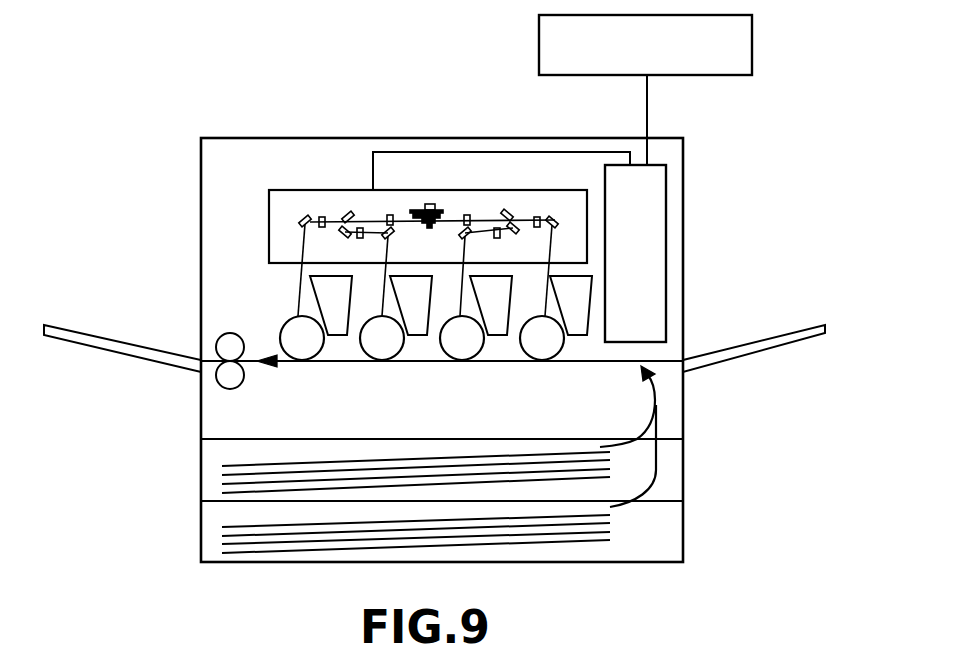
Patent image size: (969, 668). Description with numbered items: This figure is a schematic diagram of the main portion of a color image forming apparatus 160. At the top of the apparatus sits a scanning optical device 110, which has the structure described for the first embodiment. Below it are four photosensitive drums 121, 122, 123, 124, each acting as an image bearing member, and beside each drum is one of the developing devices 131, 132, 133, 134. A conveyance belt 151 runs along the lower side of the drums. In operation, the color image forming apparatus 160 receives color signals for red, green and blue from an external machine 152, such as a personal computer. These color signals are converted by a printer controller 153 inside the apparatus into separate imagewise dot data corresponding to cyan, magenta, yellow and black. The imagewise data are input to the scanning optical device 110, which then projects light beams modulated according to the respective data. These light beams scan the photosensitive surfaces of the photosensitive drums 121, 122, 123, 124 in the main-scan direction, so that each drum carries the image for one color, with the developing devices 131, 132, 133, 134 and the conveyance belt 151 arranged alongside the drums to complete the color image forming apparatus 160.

The color image forming apparatus 160 is at (243, 160).
The scanning optical device 110 is at (295, 207).
The photosensitive drum 121 is at (303, 338).
The photosensitive drum 122 is at (383, 338).
The photosensitive drum 123 is at (463, 338).
The photosensitive drum 124 is at (543, 338).
The developing device 131 is at (331, 305).
The developing device 132 is at (411, 305).
The developing device 133 is at (491, 305).
The developing device 134 is at (571, 305).
The conveyance belt 151 is at (660, 390).
The external machine 152 is at (733, 62).
The printer controller 153 is at (658, 257).